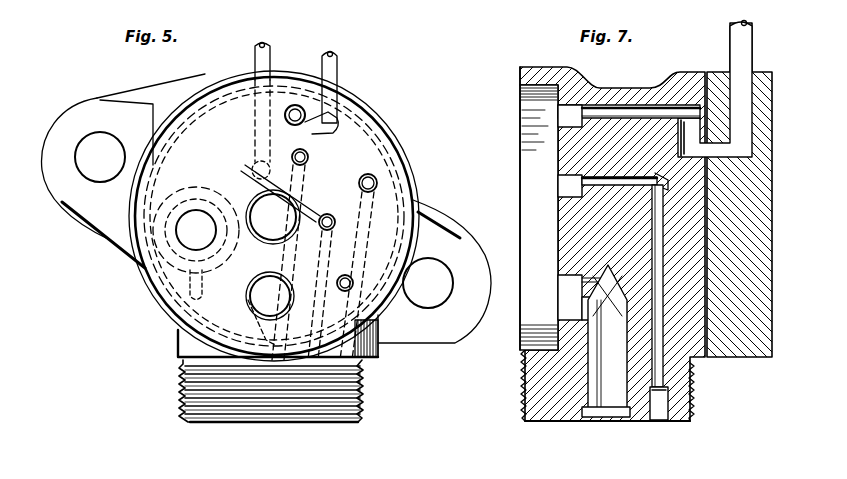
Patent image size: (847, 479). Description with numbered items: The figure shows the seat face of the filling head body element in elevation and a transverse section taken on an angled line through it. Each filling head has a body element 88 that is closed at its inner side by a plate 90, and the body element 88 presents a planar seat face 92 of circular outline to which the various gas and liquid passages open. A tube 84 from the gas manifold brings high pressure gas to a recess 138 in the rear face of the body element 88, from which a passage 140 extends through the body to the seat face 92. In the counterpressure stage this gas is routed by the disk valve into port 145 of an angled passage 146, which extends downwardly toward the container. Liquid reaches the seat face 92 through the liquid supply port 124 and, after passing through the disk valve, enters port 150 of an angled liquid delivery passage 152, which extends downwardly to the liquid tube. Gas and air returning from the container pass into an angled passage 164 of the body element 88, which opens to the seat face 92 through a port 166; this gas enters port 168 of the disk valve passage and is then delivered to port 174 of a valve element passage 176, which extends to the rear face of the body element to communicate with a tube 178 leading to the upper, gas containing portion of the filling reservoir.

In FIG. 5, the tube 84 is at (257, 62).
In FIG. 7, the body element 88 is at (638, 90).
In FIG. 7, the plate 90 is at (737, 342).
In FIG. 5, the seat face 92 is at (395, 5).
In FIG. 7, the seat face 92 is at (556, 232).
In FIG. 5, the liquid supply port 124 is at (180, 250).
In FIG. 5, the recess 138 is at (300, 170).
In FIG. 5, the passage 140 is at (327, 213).
In FIG. 7, the port 145 is at (557, 183).
In FIG. 7, the angled passage 146 is at (557, 190).
In FIG. 5, the port 150 is at (256, 292).
In FIG. 7, the port 150 is at (566, 290).
In FIG. 5, the angled liquid delivery passage 152 is at (253, 343).
In FIG. 7, the angled liquid delivery passage 152 is at (592, 375).
In FIG. 5, the angled passage 164 is at (372, 357).
In FIG. 5, the port 166 is at (410, 160).
In FIG. 5, the port 168 is at (340, 291).
In FIG. 5, the port 174 is at (293, 104).
In FIG. 7, the port 174 is at (557, 118).
In FIG. 5, the valve element passage 176 is at (352, 98).
In FIG. 7, the valve element passage 176 is at (604, 108).
In FIG. 5, the tube 178 is at (343, 62).
In FIG. 7, the tube 178 is at (735, 55).